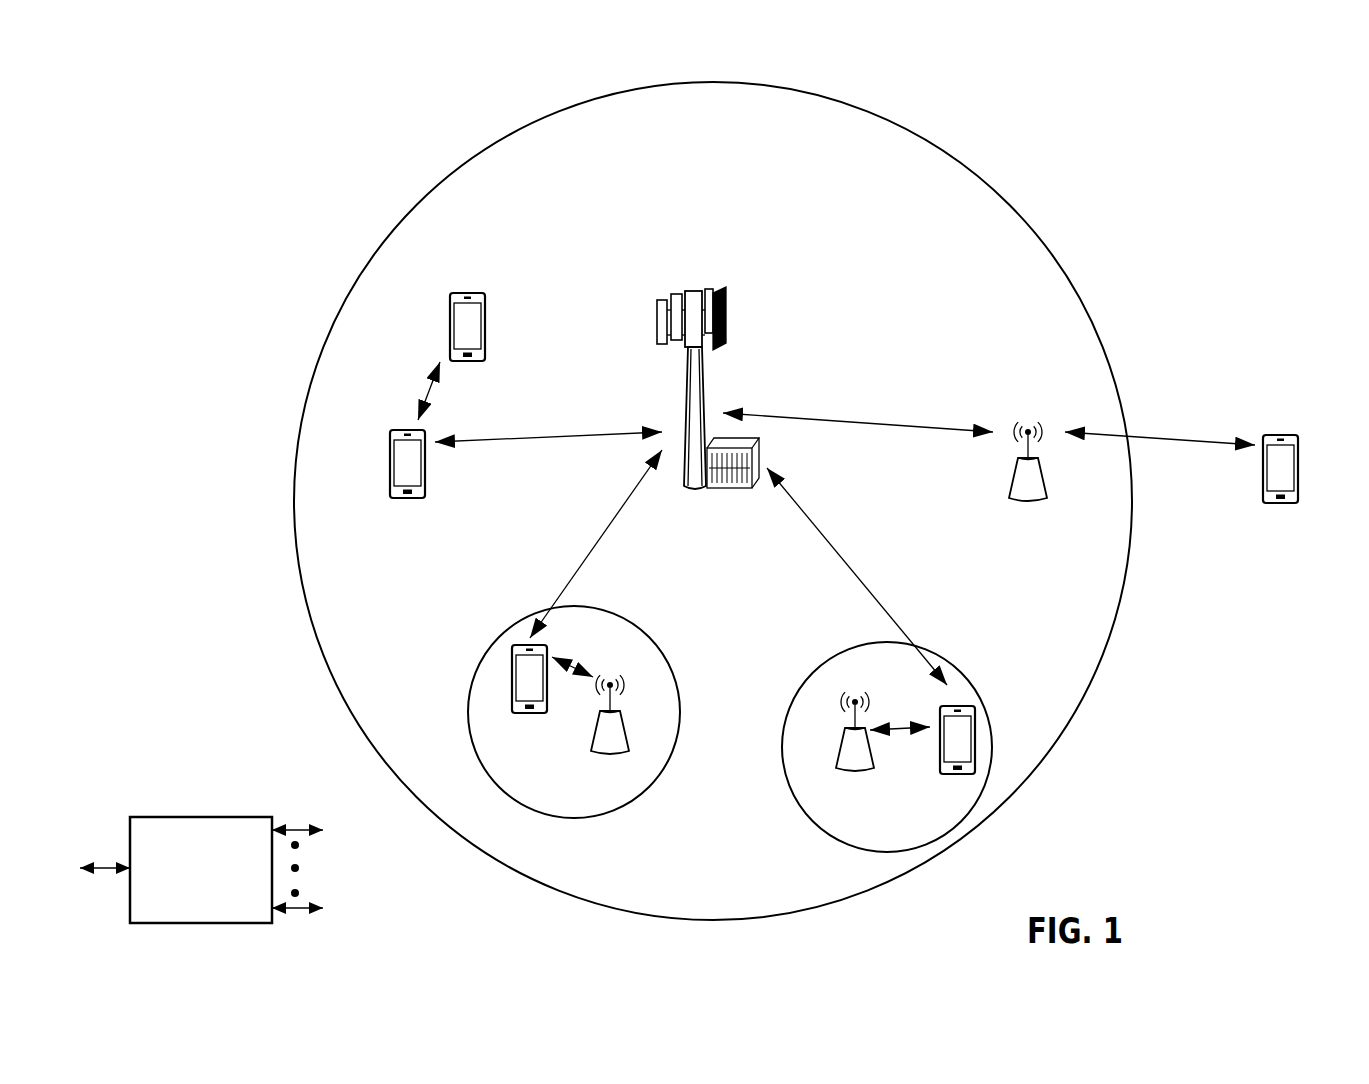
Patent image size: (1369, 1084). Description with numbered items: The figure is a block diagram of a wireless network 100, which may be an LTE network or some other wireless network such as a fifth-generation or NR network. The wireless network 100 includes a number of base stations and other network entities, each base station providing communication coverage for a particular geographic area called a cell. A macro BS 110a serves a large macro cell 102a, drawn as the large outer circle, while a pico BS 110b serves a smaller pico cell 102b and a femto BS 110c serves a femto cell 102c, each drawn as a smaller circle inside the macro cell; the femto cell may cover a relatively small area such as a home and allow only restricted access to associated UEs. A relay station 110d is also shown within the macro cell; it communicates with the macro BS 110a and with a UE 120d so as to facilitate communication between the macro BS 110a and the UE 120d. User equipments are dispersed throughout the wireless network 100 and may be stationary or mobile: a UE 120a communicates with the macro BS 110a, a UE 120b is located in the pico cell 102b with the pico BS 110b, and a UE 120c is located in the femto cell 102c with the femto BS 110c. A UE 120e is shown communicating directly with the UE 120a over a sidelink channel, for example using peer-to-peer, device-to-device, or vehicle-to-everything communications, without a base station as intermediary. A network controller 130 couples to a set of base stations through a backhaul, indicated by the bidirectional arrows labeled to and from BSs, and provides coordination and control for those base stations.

The wireless network 100 is at (187, 80).
The macro cell 102a is at (993, 190).
The pico cell 102b is at (665, 656).
The femto cell 102c is at (828, 662).
The macro BS 110a is at (706, 289).
The pico BS 110b is at (632, 746).
The femto BS 110c is at (837, 762).
The relay station 110d is at (1029, 423).
The UE 120a is at (390, 462).
The UE 120b is at (518, 714).
The UE 120c is at (940, 774).
The UE 120d is at (1291, 433).
The UE 120e is at (451, 312).
The network controller 130 is at (200, 817).